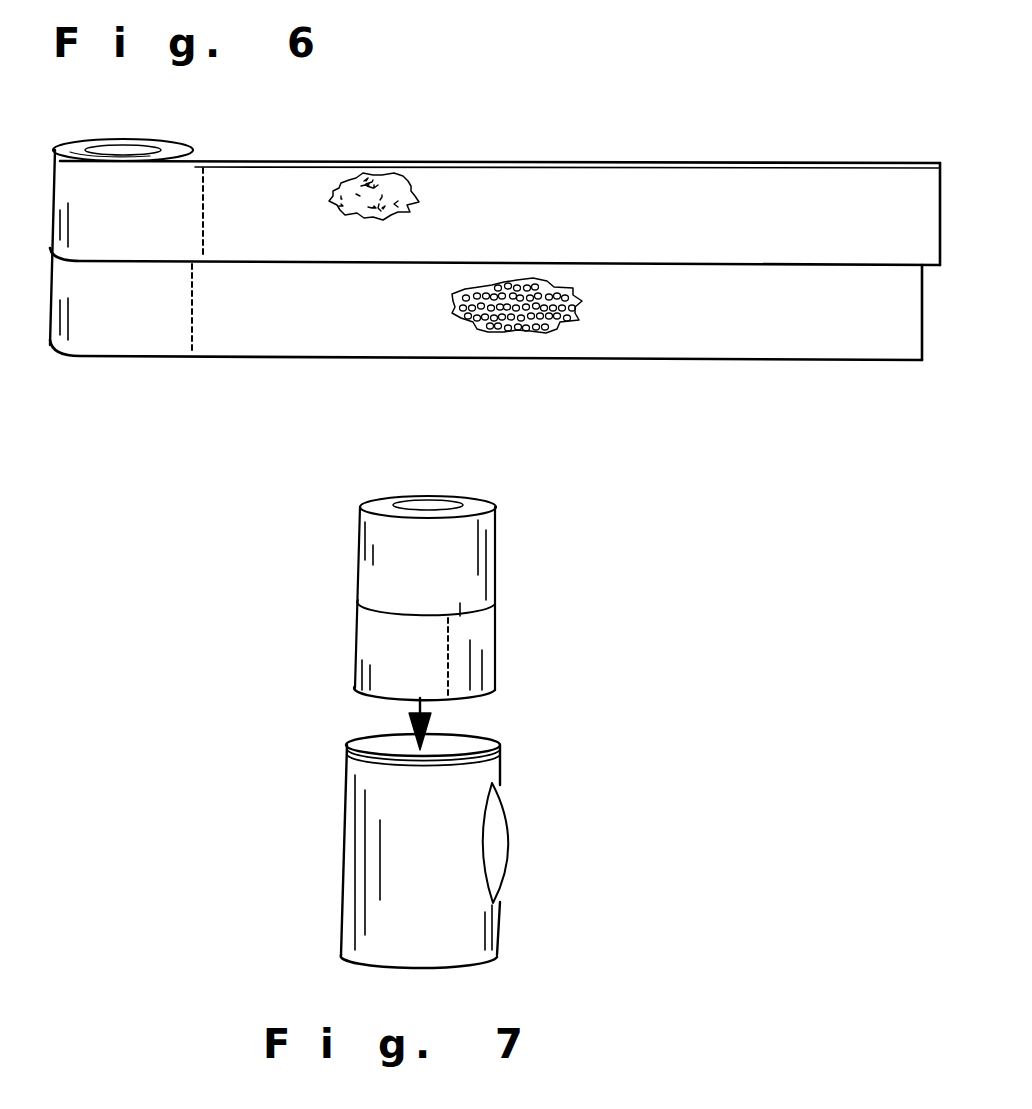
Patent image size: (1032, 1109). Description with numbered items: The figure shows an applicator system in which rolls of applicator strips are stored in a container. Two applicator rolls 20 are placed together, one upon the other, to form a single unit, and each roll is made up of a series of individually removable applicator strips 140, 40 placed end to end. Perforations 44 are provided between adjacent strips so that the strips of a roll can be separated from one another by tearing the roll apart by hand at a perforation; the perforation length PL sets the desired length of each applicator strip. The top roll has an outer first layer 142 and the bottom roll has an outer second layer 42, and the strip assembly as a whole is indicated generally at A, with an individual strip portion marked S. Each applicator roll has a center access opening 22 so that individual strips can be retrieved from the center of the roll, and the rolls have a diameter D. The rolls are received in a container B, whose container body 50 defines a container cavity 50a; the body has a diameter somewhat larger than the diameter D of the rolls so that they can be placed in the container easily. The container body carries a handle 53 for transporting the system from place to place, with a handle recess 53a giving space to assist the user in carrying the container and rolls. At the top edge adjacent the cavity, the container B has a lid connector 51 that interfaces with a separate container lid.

In FIG. 6, the applicator roll 20 is at (170, 140).
In FIG. 7, the applicator roll 20 is at (357, 547).
In FIG. 7, the center access opening 22 is at (450, 500).
In FIG. 6, the applicator strip 40 is at (630, 262).
In FIG. 6, the outer second layer 42 is at (818, 345).
In FIG. 6, the perforations 44 is at (203, 213).
In FIG. 7, the perforations 44 is at (450, 643).
In FIG. 6, the applicator strip 140 is at (550, 162).
In FIG. 6, the outer first layer 142 is at (817, 212).
In FIG. 6, the perforation length PL is at (220, 158).
In FIG. 6, the strip S is at (366, 344).
In FIG. 6, the tape assembly A is at (780, 374).
In FIG. 7, the diameter of the applicator rolls D is at (498, 492).
In FIG. 7, the container body 50 is at (498, 937).
In FIG. 7, the container cavity 50a is at (454, 749).
In FIG. 7, the lid connector 51 is at (502, 746).
In FIG. 7, the handle 53 is at (507, 860).
In FIG. 7, the handle recess 53a is at (490, 835).
In FIG. 7, the container B is at (331, 893).